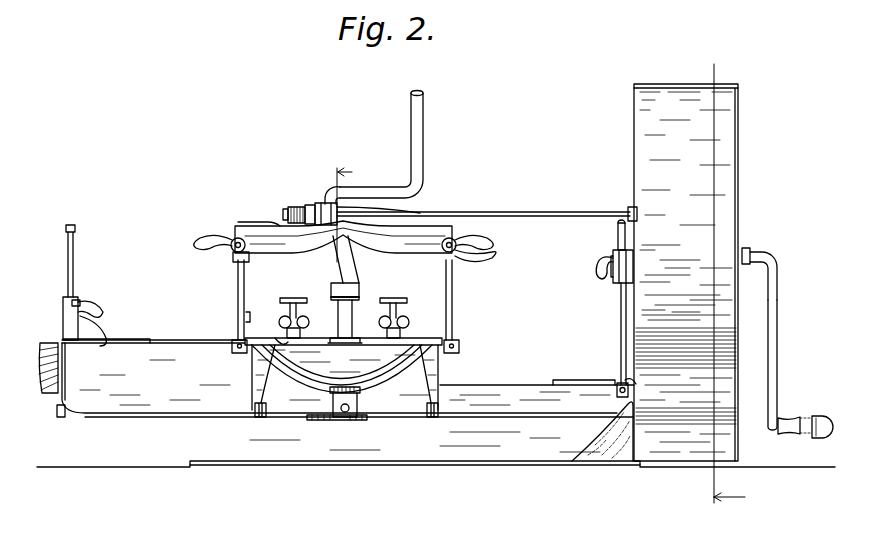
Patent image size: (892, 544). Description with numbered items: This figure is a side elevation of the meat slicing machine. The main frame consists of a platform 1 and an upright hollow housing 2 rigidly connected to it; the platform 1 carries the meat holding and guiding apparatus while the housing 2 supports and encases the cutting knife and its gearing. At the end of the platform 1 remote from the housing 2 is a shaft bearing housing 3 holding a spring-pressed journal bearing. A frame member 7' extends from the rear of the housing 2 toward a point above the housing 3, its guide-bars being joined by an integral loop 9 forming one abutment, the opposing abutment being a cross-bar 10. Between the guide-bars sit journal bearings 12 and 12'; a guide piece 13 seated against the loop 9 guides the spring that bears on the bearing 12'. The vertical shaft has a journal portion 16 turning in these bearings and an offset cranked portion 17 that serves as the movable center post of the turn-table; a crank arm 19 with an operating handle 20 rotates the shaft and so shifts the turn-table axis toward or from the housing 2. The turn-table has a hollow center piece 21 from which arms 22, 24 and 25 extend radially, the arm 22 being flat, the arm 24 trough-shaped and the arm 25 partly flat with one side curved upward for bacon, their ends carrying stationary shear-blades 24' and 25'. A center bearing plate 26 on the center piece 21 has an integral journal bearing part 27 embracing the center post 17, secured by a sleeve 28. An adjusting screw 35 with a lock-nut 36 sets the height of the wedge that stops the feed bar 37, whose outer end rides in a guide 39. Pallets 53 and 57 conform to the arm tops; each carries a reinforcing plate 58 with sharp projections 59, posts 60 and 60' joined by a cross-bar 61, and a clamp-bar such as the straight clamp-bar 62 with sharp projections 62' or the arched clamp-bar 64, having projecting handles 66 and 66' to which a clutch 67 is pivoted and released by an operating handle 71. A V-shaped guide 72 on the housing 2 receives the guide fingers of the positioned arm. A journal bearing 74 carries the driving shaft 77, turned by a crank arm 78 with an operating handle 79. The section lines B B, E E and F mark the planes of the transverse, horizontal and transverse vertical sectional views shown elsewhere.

The platform 1 is at (490, 464).
The upright hollow housing 2 is at (655, 92).
The shaft bearing housing 3 is at (323, 418).
The frame member 7' is at (487, 201).
The integral loop 9 is at (283, 212).
The cross-bar 10 is at (420, 213).
The journal bearing 12 is at (302, 277).
The journal bearing 12' is at (308, 187).
The guide piece 13 is at (294, 207).
The journal portion 16 is at (311, 205).
The offset cranked portion 17 is at (352, 270).
The crank arm 19 is at (374, 187).
The operating handle 20 is at (410, 128).
The hollow center piece 21 is at (297, 353).
The arm 22 is at (500, 385).
The arm 24 is at (228, 394).
The stationary shear-blade 24' is at (406, 399).
The arm 25 is at (345, 396).
The stationary shear-blade 25' is at (43, 351).
The plate 26 is at (360, 345).
The journal bearing part 27 is at (360, 296).
The sleeve 28 is at (397, 302).
The adjusting screw 35 is at (404, 312).
The lock-nut 36 is at (410, 322).
The feed bar 37 is at (358, 420).
The guide 39 is at (336, 417).
The pallet 53 is at (558, 380).
The pallet 57 is at (141, 338).
The reinforcing plate 58 is at (618, 383).
The sharp projections 59 is at (285, 345).
The post 60 is at (415, 322).
The post 60' is at (301, 282).
The cross-bar 61 is at (272, 225).
The clamp-bar 62 is at (633, 272).
The sharp projections 62' is at (227, 319).
The clamp-bar 64 is at (278, 254).
The projecting handle 66 is at (415, 276).
The projecting handle 66' is at (311, 309).
The clutch 67 is at (630, 240).
The operating handle 71 is at (206, 240).
The V-shaped guide 72 is at (596, 428).
The journal bearing 74 is at (752, 252).
The driving shaft 77 is at (778, 247).
The crank arm 78 is at (780, 333).
The operating handle 79 is at (796, 417).
The line B B is at (724, 288).
The line E E is at (742, 396).
The line F is at (339, 205).